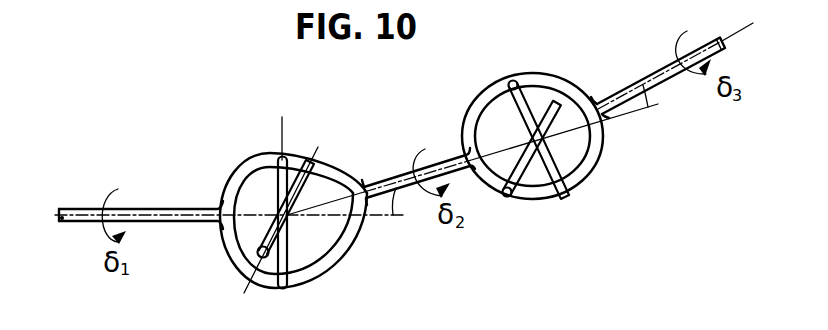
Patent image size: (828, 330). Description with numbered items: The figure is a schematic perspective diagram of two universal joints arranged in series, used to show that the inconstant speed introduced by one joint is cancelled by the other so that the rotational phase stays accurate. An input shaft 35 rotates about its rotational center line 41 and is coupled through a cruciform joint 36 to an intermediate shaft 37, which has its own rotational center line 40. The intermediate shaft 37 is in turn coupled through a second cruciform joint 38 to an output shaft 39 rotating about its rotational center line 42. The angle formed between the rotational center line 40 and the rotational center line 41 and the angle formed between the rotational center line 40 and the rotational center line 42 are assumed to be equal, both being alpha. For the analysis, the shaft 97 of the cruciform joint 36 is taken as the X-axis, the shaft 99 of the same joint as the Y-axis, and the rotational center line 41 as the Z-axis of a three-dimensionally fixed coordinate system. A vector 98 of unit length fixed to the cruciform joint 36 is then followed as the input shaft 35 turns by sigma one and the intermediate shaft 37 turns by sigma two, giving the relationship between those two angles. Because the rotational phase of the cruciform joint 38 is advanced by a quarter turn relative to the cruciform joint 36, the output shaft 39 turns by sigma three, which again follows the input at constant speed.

The input shaft 35 is at (177, 223).
The cruciform joint 36 is at (287, 266).
The intermediate shaft 37 is at (404, 173).
The cruciform joint 38 is at (521, 196).
The output shaft 39 is at (663, 64).
The rotational center line of the intermediate shaft 40 is at (633, 117).
The rotational center line of the input shaft 41 is at (386, 218).
The rotational center line of the output shaft 42 is at (734, 39).
The shaft of the cruciform joint 97 is at (248, 285).
The vector 98 is at (283, 245).
The shaft of the cruciform joint 99 is at (281, 129).